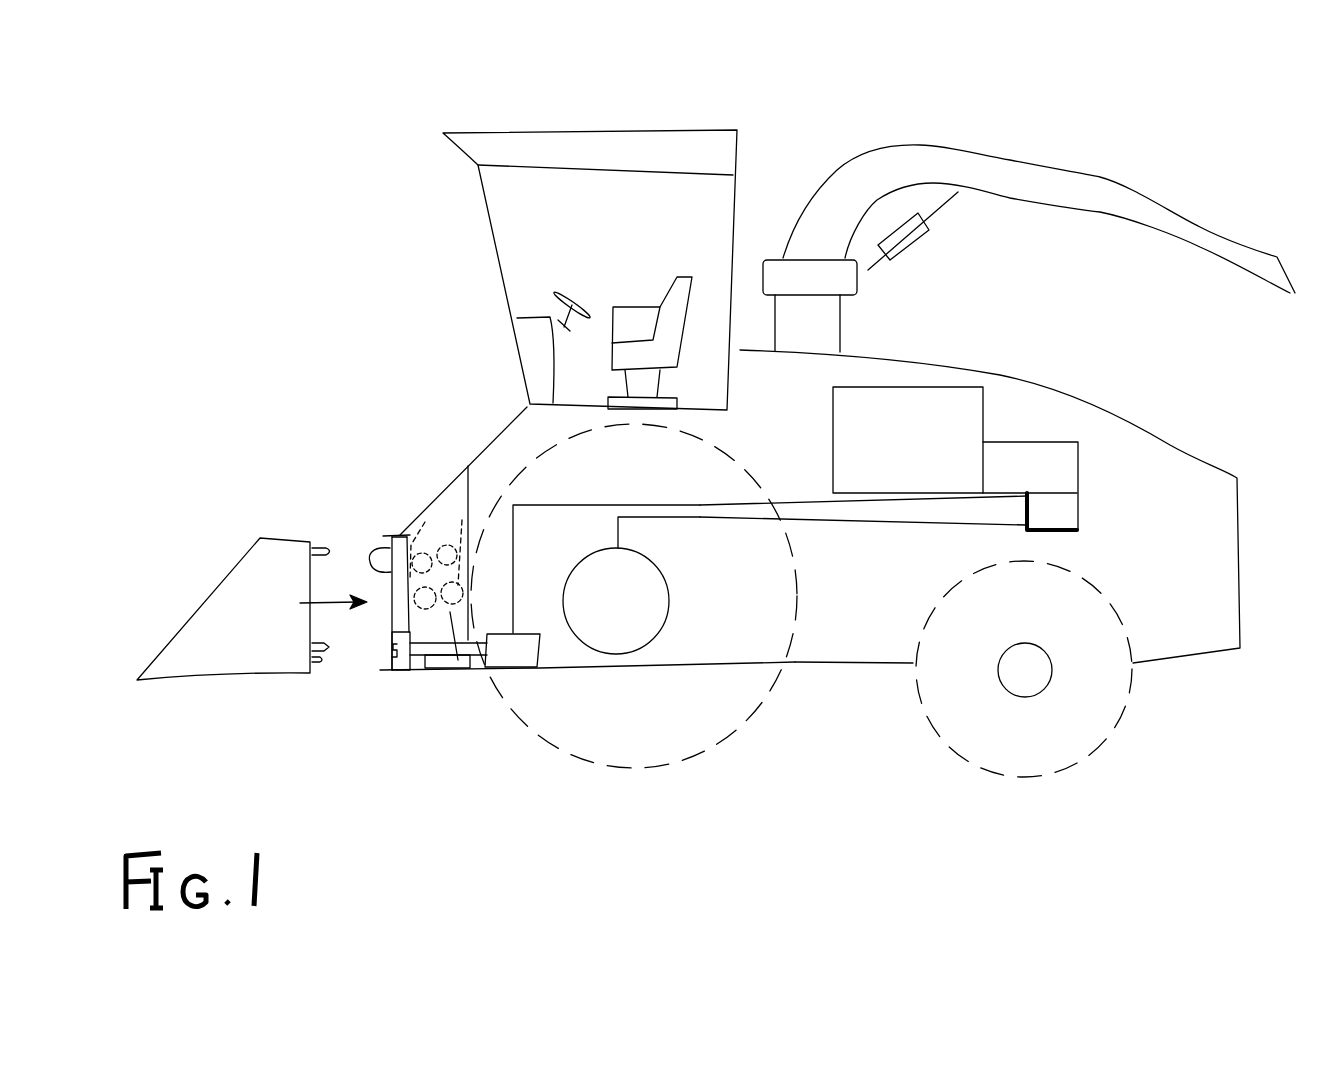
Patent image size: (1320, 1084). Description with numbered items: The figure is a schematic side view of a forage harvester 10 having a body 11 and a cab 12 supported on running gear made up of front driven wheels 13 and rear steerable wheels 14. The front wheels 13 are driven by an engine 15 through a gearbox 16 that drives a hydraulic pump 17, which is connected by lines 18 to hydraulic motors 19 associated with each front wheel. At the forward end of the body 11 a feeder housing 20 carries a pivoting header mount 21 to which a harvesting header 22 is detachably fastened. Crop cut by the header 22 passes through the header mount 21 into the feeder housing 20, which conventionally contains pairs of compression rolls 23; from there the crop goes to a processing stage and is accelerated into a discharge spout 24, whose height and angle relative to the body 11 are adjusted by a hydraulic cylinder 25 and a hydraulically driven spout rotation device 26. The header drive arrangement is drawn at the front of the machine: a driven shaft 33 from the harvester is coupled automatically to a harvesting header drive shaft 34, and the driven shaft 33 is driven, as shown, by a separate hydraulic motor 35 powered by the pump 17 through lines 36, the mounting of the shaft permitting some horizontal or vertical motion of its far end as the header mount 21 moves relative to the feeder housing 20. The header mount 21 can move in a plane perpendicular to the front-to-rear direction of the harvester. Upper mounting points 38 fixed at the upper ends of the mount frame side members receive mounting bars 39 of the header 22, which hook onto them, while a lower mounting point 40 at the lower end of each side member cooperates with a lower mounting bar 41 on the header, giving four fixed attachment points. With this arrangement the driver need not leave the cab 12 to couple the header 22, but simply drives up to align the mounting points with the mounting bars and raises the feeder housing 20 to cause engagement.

The forage harvester 10 is at (268, 288).
The body 11 is at (1183, 497).
The cab 12 is at (503, 190).
The front driven wheels 13 is at (713, 743).
The rear steerable wheels 14 is at (1105, 743).
The engine 15 is at (913, 387).
The gearbox 16 is at (1040, 440).
The hydraulic pump 17 is at (1080, 509).
The lines 18 is at (850, 520).
The hydraulic motors 19 is at (667, 617).
The feeder housing 20 is at (447, 500).
The pivoting header mount 21 is at (387, 537).
The harvesting header 22 is at (220, 593).
The compression rolls 23 is at (417, 533).
The discharge spout 24 is at (1080, 197).
The hydraulic cylinder 25 is at (908, 237).
The spout rotation device 26 is at (823, 282).
The driven shaft 33 is at (425, 663).
The harvesting header drive shaft 34 is at (323, 643).
The hydraulic motor 35 is at (513, 658).
The lines 36 is at (572, 503).
The upper mounting points 38 is at (373, 547).
The mounting bars 39 is at (328, 540).
The lower mounting point 40 is at (387, 665).
The lower mounting bars 41 is at (317, 667).